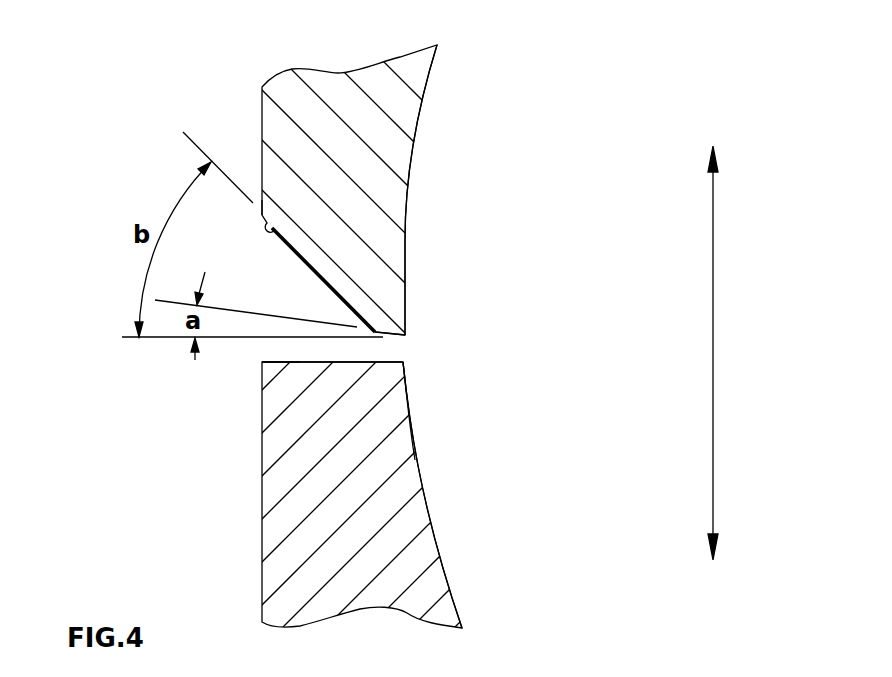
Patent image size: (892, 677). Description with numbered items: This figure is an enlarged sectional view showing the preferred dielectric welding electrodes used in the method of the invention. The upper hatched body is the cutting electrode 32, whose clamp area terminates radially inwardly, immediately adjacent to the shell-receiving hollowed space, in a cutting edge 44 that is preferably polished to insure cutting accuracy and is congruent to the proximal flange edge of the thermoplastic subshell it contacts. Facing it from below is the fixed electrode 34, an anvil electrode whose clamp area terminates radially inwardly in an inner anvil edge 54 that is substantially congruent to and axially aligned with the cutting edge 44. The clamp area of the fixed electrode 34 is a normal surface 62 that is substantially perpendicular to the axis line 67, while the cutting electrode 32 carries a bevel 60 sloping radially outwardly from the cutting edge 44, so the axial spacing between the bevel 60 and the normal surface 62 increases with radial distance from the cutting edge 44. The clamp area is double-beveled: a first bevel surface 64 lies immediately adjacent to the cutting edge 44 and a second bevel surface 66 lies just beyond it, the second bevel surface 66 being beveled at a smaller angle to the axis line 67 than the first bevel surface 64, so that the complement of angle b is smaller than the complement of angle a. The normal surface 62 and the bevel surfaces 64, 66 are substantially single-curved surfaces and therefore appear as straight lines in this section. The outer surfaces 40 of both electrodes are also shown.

The cutting electrode 32 is at (407, 77).
The fixed electrode 34 is at (421, 601).
The outer surface 40 is at (436, 336).
The cutting edge 44 is at (407, 336).
The inner anvil edge 54 is at (405, 362).
The bevel 60 is at (312, 266).
The normal surface 62 is at (294, 362).
The first bevel surface 64 is at (397, 337).
The second bevel surface 66 is at (272, 232).
The axis line 67 is at (708, 444).